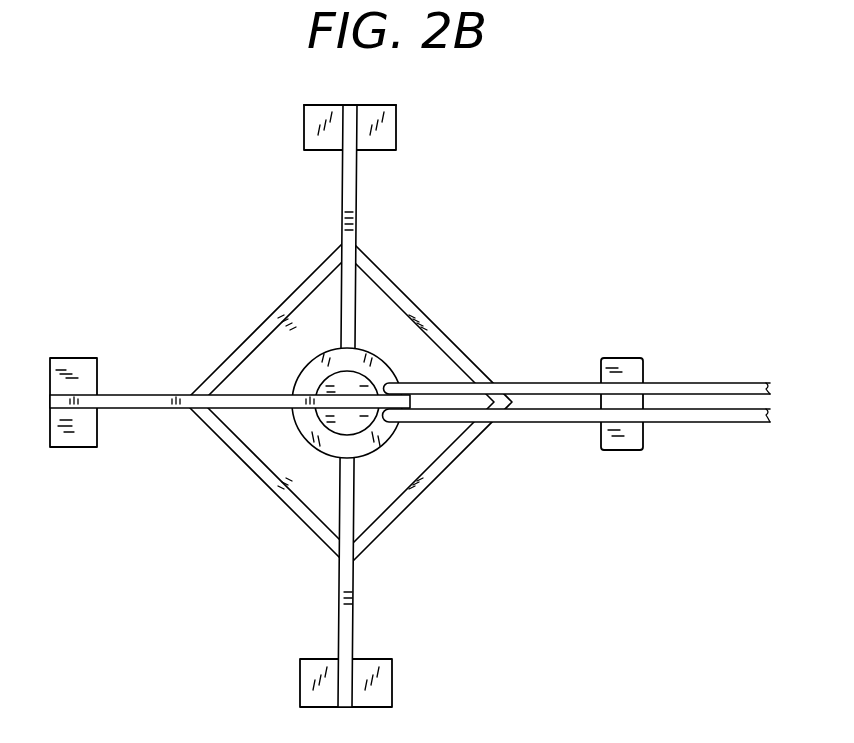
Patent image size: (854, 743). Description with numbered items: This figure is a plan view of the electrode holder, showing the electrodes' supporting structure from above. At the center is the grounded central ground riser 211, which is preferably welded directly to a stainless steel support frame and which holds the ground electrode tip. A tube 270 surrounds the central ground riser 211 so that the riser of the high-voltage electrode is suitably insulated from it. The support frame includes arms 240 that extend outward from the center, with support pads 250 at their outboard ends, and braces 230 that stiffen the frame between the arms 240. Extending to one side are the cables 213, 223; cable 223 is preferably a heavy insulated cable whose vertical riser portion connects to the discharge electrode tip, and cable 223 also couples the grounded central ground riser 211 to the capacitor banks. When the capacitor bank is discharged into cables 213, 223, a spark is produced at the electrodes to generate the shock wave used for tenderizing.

The central ground riser 211 is at (380, 380).
The cable 213 is at (720, 382).
The cable 223 is at (720, 423).
The braces 230 is at (242, 336).
The arms 240 is at (358, 216).
The support pads 250 is at (397, 128).
The tube 270 is at (388, 385).